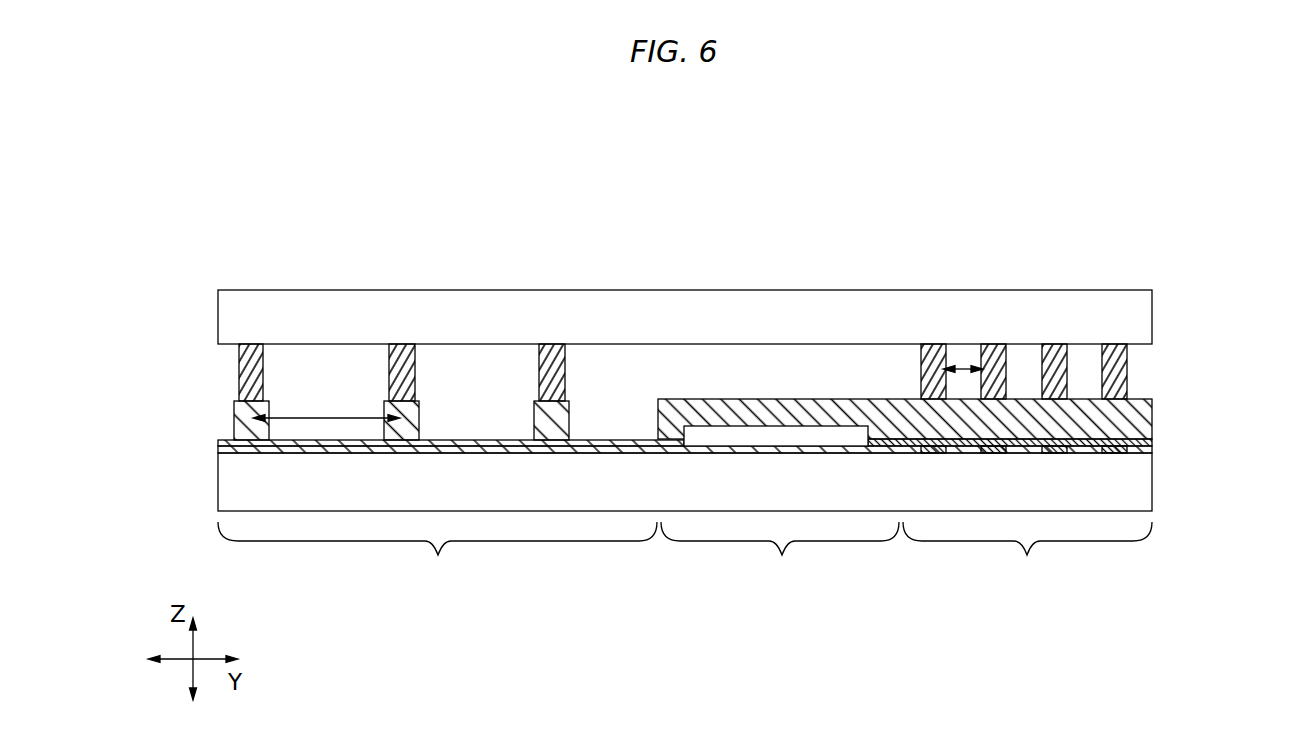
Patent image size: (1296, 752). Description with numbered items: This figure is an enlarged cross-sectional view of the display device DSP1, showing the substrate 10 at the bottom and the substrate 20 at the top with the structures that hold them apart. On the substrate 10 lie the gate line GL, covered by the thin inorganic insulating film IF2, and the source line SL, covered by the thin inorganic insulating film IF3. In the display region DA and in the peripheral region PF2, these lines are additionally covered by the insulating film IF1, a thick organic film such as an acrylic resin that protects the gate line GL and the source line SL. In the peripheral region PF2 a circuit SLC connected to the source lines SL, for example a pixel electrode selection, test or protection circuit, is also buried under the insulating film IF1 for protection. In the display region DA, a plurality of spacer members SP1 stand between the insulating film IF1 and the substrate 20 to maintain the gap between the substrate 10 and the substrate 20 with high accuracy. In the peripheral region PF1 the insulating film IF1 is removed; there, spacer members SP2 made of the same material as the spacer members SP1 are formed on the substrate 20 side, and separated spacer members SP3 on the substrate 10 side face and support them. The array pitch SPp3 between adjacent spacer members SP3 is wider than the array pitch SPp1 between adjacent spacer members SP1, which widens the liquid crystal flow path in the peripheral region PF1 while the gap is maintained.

The substrate 20 is at (1137, 320).
The substrate 10 is at (1137, 488).
The insulating film IF1 is at (1140, 400).
The insulating film IF2 is at (604, 452).
The insulating film IF3 is at (630, 440).
The source line SL is at (1135, 433).
The gate line GL is at (933, 453).
The circuit SLC is at (766, 437).
The spacer member SP1 is at (935, 352).
The spacer member SP2 is at (548, 352).
The spacer member SP3 is at (542, 440).
The array pitch SPp1 is at (935, 369).
The array pitch SPp3 is at (327, 417).
The display device DSP1 is at (566, 226).
The peripheral region PF1 is at (437, 557).
The peripheral region PF2 is at (780, 552).
The display region DA is at (1027, 552).